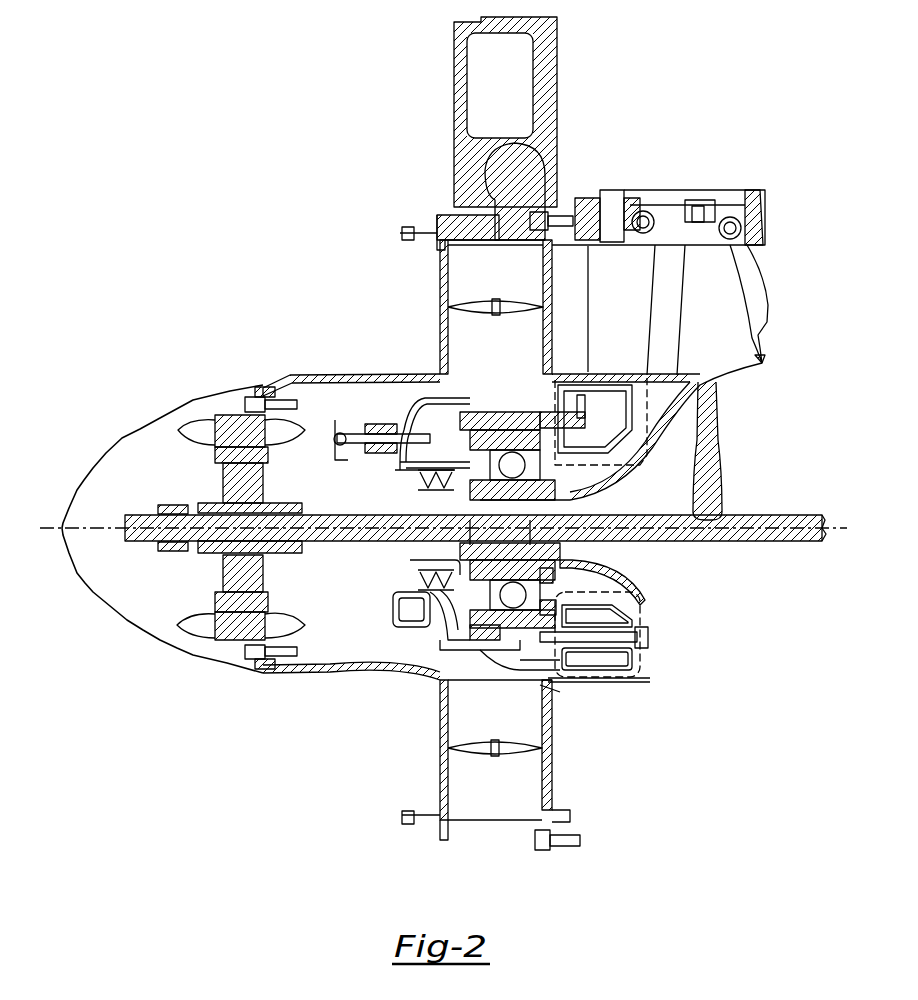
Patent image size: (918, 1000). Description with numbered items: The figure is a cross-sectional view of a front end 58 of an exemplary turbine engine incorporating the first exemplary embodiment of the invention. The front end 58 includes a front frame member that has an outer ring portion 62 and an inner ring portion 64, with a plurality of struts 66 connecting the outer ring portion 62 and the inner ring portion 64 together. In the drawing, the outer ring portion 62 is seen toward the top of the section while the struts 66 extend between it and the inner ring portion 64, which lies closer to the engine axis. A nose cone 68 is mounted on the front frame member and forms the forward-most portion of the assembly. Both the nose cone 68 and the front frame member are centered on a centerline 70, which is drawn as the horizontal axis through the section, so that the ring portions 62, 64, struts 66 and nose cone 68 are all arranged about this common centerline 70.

The front end 58 is at (185, 158).
The outer ring portion 62 is at (445, 215).
The inner ring portion 64 is at (552, 683).
The struts 66 is at (457, 294).
The nose cone 68 is at (124, 440).
The centerline 70 is at (42, 528).